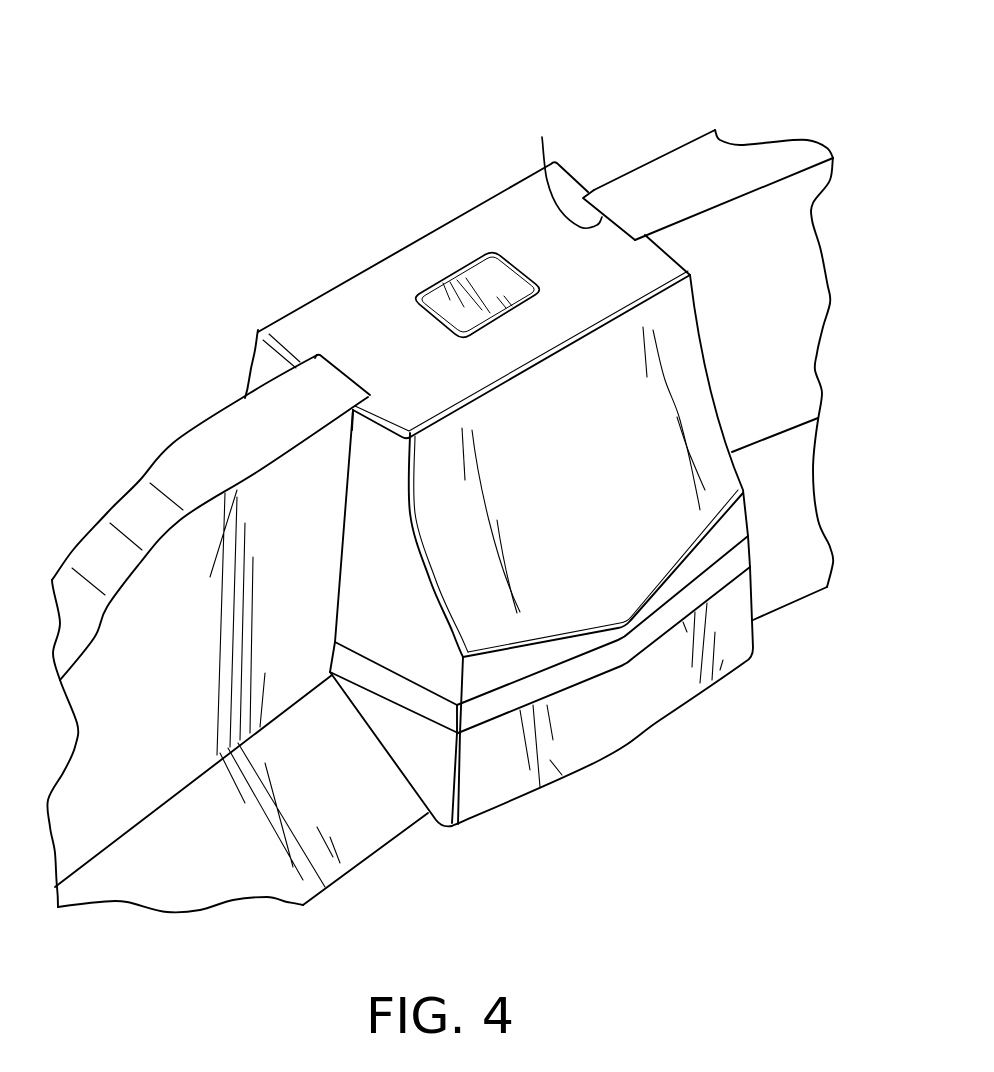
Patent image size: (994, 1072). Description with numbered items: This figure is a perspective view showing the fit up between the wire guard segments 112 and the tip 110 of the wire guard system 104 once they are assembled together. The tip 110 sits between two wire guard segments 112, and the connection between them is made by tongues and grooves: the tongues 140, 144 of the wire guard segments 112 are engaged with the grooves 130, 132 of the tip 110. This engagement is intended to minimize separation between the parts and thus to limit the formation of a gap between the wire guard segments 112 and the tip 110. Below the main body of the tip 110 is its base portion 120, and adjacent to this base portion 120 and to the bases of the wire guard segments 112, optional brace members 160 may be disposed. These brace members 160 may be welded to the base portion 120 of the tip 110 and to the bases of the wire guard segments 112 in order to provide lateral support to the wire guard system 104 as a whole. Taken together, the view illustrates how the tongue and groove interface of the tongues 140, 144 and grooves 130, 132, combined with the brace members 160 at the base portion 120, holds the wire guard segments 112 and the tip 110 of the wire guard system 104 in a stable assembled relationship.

The wire guard system 104 is at (333, 133).
The tip 110 is at (480, 195).
The wire guard segments 112 is at (173, 440).
The base portion 120 is at (582, 752).
The groove 130 is at (562, 167).
The groove 132 is at (350, 375).
The tongue 140 is at (586, 192).
The tongue 144 is at (322, 370).
The brace members 160 is at (784, 593).